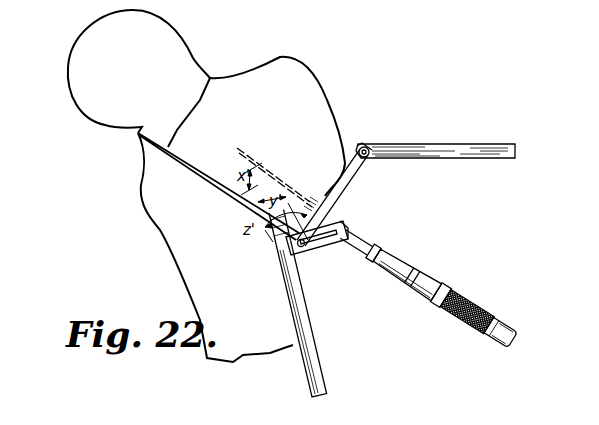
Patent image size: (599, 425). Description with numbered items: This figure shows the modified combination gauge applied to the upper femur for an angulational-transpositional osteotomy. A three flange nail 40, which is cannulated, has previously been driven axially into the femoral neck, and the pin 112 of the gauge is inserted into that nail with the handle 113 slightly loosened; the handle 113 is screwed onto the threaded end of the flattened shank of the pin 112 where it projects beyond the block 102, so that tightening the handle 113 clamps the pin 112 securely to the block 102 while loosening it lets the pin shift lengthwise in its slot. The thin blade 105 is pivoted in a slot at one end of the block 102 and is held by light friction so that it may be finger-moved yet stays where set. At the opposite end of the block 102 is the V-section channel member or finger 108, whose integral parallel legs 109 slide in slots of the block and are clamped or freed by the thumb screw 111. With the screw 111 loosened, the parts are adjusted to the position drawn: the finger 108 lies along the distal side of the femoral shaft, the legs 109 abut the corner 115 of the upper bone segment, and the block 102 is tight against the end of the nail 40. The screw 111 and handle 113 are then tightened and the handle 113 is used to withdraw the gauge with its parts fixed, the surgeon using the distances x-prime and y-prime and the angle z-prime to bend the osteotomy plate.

The three flange nail 40 is at (317, 201).
The block 102 is at (359, 168).
The thin blade 105 is at (447, 150).
The channel member or finger 108 is at (308, 344).
The legs 109 is at (336, 248).
The thumb screw 111 is at (305, 250).
The pin 112 is at (252, 155).
The handle 113 is at (430, 279).
The corner of the upper bone segment 115 is at (277, 255).